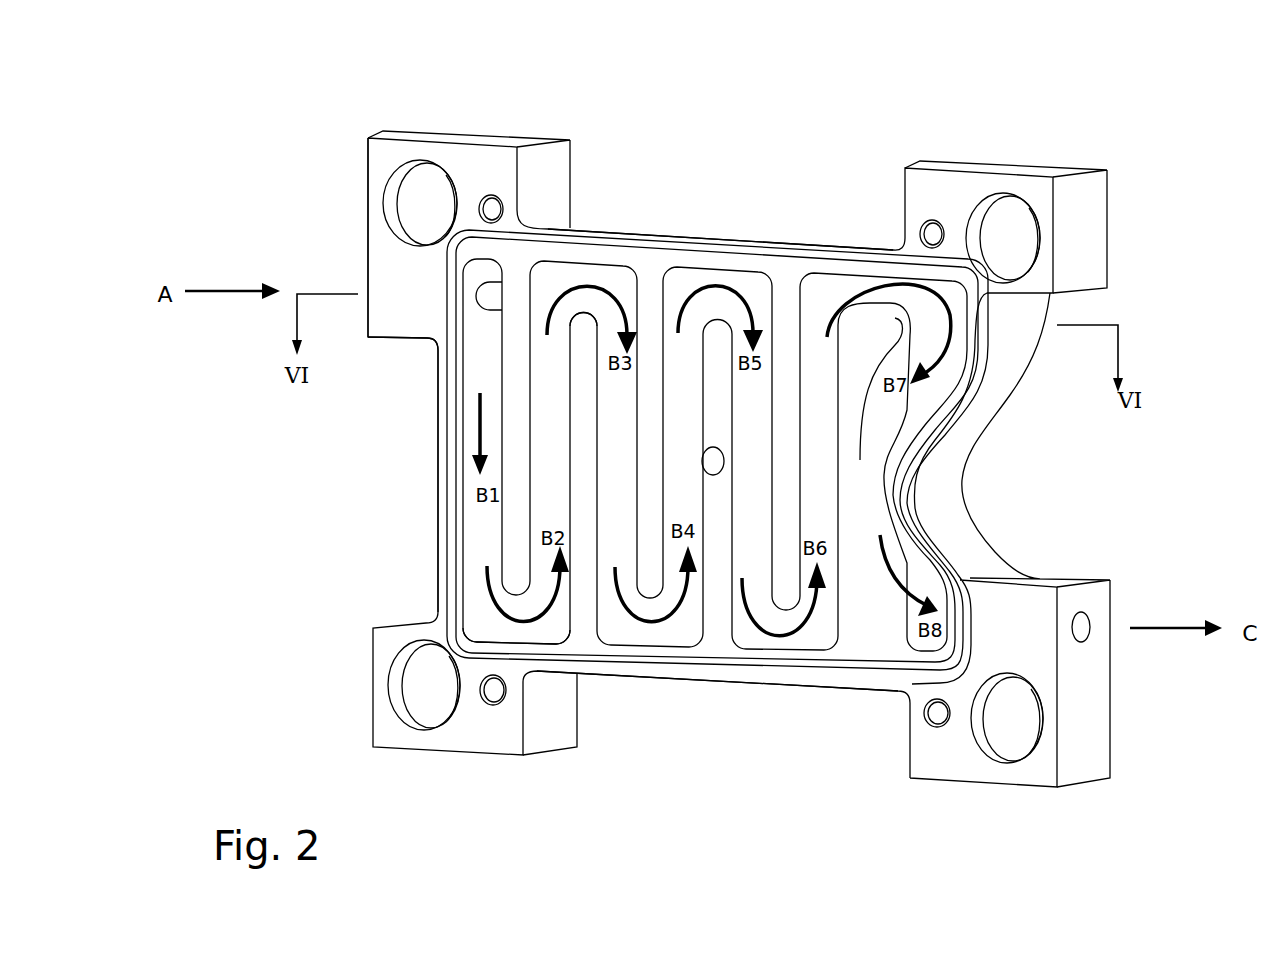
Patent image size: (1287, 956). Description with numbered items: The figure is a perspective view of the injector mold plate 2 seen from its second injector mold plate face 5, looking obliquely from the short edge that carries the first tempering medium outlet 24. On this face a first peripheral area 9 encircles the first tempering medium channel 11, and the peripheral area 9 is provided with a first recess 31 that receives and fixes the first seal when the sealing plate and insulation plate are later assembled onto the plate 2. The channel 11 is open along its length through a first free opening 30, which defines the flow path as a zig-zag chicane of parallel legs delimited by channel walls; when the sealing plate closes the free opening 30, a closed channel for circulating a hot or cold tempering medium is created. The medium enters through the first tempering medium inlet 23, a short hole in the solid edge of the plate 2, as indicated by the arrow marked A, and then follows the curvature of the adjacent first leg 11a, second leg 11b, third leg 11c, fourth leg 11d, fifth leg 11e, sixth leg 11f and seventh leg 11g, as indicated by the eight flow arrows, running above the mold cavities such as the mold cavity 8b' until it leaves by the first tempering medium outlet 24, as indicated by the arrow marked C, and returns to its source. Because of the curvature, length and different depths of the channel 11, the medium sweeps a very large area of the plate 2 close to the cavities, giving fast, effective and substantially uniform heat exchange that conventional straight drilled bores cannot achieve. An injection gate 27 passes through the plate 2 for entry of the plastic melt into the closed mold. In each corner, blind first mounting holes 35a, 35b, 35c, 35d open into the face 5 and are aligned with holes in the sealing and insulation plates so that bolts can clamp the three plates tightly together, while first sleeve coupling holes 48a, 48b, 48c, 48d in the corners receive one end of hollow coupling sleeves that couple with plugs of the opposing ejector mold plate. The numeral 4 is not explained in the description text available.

The injector mold plate 2 is at (773, 110).
The plate top face 4 is at (680, 232).
The second injector mold plate face 5 is at (398, 320).
The first peripheral area 9 is at (440, 515).
The first tempering medium channel 11 is at (678, 630).
The first leg 11a is at (468, 485).
The second leg 11b is at (555, 330).
The third leg 11c is at (609, 612).
The fourth leg 11d is at (687, 343).
The fifth leg 11e is at (763, 613).
The sixth leg 11f is at (818, 347).
The seventh leg 11g is at (910, 640).
The first tempering medium inlet 23 is at (368, 280).
The first tempering medium outlet 24 is at (1078, 615).
The injection gate 27 is at (716, 472).
The first free opening 30 is at (483, 553).
The first recess 31 is at (787, 672).
The first mounting hole 35a is at (930, 222).
The first mounting hole 35b is at (490, 205).
The first mounting hole 35c is at (493, 695).
The first mounting hole 35d is at (938, 725).
The first sleeve coupling hole 48a is at (1005, 225).
The first sleeve coupling hole 48b is at (410, 188).
The first sleeve coupling hole 48c is at (430, 705).
The first sleeve coupling hole 48d is at (1023, 740).
The mold cavity 8b' is at (600, 249).